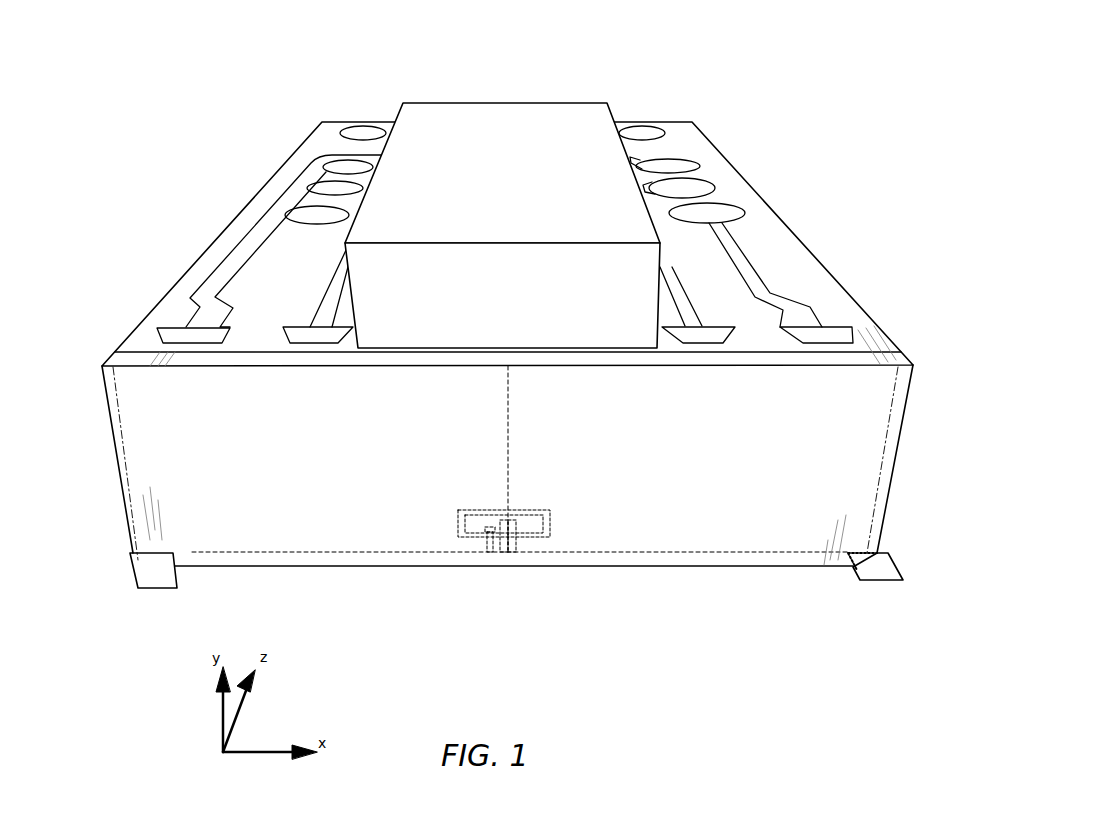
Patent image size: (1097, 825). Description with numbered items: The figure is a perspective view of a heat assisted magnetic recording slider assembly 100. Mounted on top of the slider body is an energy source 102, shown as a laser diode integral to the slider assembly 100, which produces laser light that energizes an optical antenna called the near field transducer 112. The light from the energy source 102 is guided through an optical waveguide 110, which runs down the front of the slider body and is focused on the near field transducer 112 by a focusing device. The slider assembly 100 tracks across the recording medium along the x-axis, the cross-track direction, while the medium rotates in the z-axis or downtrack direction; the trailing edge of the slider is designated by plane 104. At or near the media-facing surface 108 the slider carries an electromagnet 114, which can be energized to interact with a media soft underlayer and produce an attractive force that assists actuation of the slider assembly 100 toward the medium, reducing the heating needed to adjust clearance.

The slider assembly 100 is at (702, 65).
The energy source 102 is at (421, 102).
The plane 104 is at (160, 588).
The media-facing surface 108 is at (893, 580).
The optical waveguide 110 is at (507, 410).
The near field transducer 112 is at (505, 560).
The electromagnet 114 is at (462, 527).